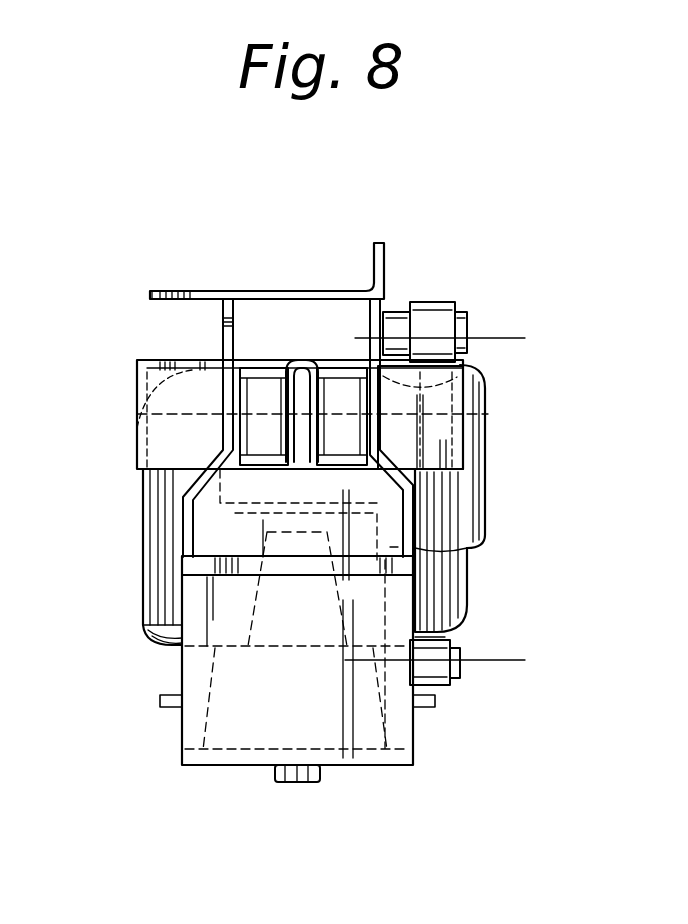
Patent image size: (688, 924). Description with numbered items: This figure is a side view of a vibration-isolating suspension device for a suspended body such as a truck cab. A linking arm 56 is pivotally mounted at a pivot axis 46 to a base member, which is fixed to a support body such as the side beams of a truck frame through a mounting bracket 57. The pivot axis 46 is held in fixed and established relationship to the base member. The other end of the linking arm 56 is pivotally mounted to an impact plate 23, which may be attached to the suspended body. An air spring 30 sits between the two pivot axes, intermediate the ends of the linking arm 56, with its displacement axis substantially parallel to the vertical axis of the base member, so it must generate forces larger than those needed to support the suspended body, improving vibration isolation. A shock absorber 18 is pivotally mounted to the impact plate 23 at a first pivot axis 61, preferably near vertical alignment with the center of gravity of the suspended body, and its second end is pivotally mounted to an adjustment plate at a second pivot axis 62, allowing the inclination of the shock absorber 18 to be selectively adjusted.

The impact plate 23 is at (392, 264).
The first pivot axis 61 is at (497, 338).
The linking arm 56 is at (137, 362).
The pivot axis 46 is at (190, 417).
The shock absorber 18 is at (485, 490).
The air spring 30 is at (140, 530).
The mounting bracket 57 is at (202, 620).
The second pivot axis 62 is at (497, 660).